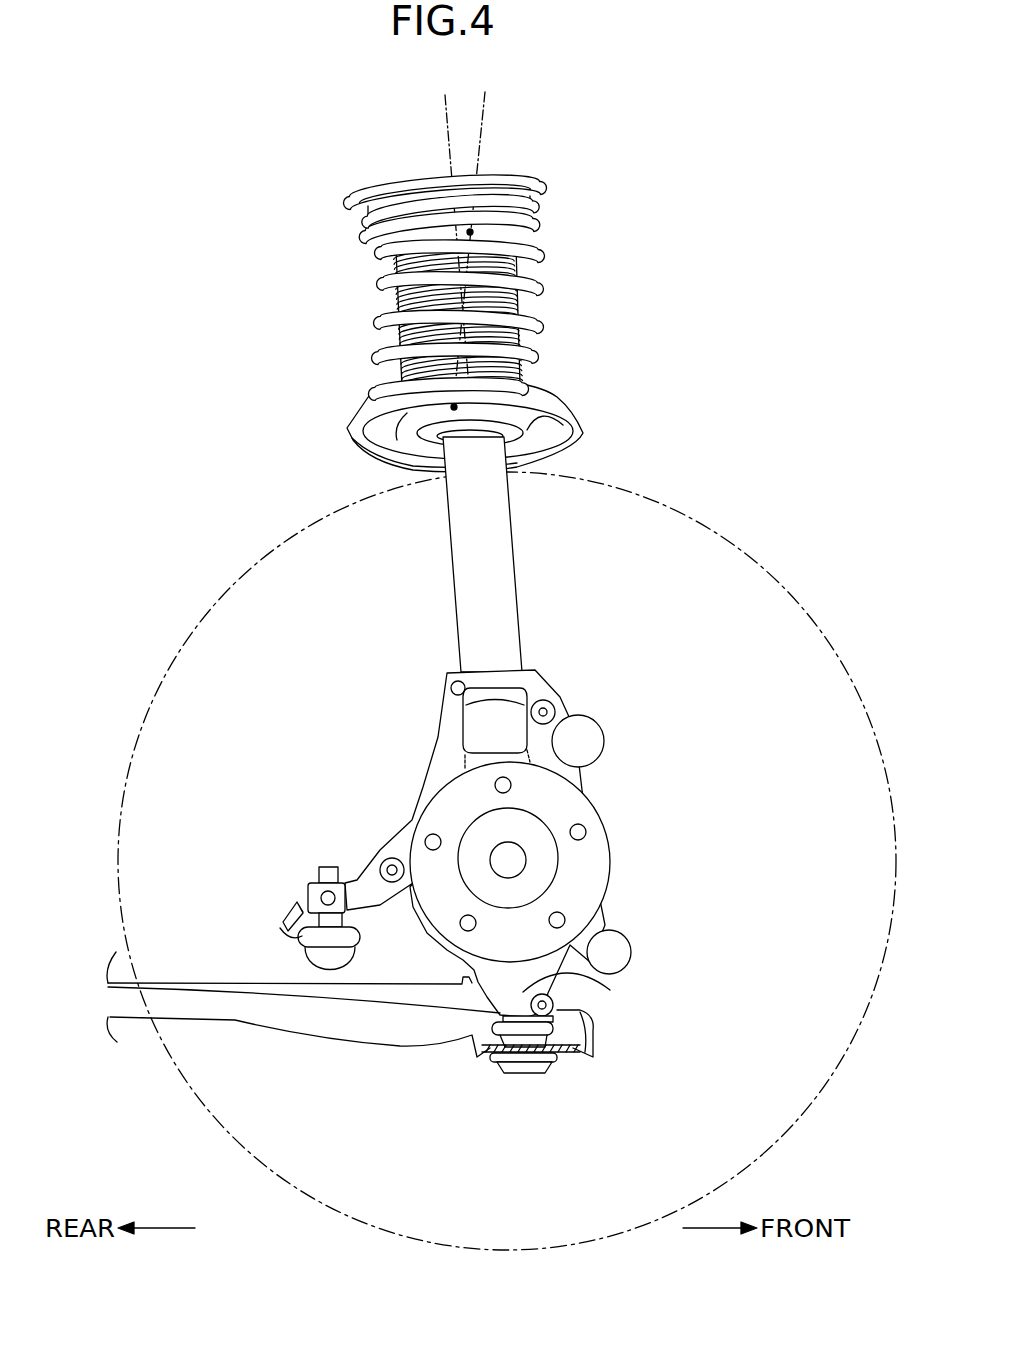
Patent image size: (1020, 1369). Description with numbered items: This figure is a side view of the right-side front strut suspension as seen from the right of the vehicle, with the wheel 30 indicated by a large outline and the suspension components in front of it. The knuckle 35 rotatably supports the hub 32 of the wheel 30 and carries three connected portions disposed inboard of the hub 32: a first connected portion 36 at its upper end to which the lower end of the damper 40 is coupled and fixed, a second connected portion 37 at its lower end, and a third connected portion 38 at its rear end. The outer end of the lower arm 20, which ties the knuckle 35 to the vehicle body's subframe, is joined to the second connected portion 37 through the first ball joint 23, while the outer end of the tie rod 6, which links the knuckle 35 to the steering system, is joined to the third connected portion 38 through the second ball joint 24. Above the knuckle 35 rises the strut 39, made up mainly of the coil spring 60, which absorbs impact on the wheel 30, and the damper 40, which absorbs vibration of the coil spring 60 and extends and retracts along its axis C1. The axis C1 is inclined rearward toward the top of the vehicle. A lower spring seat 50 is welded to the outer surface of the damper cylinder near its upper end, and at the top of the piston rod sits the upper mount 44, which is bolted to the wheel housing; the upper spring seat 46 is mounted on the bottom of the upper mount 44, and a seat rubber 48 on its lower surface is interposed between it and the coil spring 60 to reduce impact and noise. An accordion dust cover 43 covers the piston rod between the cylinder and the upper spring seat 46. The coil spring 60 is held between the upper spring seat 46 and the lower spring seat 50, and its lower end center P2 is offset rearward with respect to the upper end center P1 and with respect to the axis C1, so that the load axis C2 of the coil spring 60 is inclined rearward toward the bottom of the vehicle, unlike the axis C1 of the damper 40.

The wheel 30 is at (741, 544).
The axis of the damper C1 is at (443, 110).
The load axis of the coil spring C2 is at (488, 98).
The center of the upper end portion of the coil spring P1 is at (466, 233).
The center of the lower end portion of the coil spring P2 is at (450, 408).
The strut 39 is at (572, 283).
The damper 40 is at (500, 531).
The lower spring seat 50 is at (583, 421).
The dust cover 43 is at (520, 341).
The coil spring 60 is at (382, 313).
The seat rubber 48 is at (533, 222).
The upper spring seat 46 is at (532, 205).
The upper mount 44 is at (527, 187).
The knuckle 35 is at (506, 830).
The hub 32 is at (596, 857).
The first connected portion 36 is at (532, 683).
The second connected portion 37 is at (527, 991).
The third connected portion 38 is at (334, 866).
The second ball joint 24 is at (330, 964).
The tie rod 6 is at (296, 903).
The lower arm 20 is at (220, 982).
The first ball joint 23 is at (527, 1072).